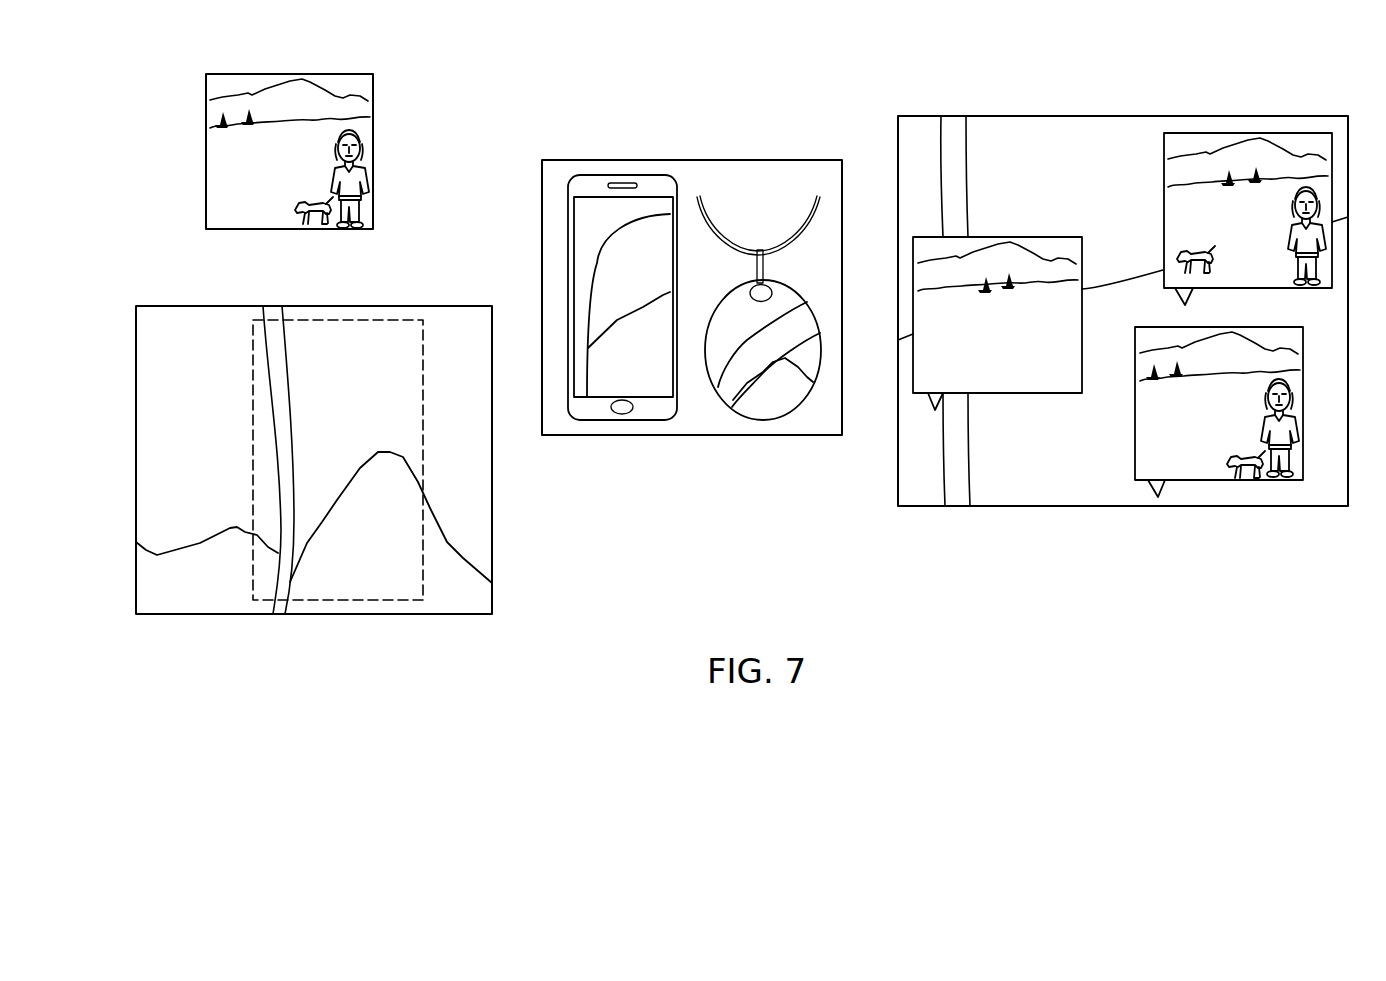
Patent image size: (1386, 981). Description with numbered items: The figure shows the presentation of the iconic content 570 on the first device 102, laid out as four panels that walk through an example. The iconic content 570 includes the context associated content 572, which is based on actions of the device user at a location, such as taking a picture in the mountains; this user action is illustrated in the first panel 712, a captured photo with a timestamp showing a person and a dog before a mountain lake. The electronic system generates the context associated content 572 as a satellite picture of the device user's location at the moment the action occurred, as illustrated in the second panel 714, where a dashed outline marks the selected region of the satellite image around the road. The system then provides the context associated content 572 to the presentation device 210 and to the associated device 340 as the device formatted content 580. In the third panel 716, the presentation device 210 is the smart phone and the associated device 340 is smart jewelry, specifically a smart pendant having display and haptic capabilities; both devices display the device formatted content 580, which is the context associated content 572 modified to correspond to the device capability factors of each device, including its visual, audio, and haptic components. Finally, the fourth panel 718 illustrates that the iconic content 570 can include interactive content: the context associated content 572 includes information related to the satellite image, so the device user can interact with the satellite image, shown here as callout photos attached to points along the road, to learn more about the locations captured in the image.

The first device 102 is at (595, 330).
The presentation device 210 is at (577, 418).
The associated device 340 is at (800, 408).
The iconic content 570 is at (363, 603).
The context associated content 572 is at (242, 192).
The device formatted content 580 is at (780, 398).
The first panel 712 is at (375, 153).
The second panel 714 is at (493, 603).
The third panel 716 is at (710, 160).
The fourth panel 718 is at (1023, 116).